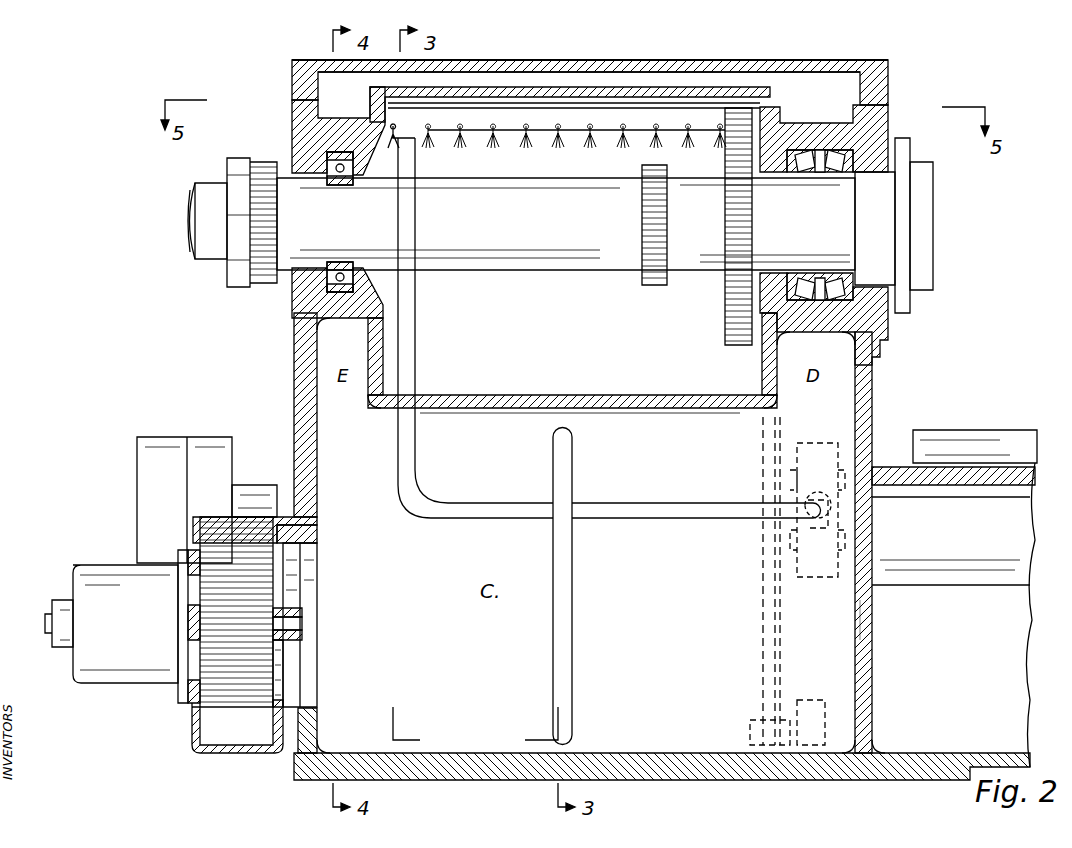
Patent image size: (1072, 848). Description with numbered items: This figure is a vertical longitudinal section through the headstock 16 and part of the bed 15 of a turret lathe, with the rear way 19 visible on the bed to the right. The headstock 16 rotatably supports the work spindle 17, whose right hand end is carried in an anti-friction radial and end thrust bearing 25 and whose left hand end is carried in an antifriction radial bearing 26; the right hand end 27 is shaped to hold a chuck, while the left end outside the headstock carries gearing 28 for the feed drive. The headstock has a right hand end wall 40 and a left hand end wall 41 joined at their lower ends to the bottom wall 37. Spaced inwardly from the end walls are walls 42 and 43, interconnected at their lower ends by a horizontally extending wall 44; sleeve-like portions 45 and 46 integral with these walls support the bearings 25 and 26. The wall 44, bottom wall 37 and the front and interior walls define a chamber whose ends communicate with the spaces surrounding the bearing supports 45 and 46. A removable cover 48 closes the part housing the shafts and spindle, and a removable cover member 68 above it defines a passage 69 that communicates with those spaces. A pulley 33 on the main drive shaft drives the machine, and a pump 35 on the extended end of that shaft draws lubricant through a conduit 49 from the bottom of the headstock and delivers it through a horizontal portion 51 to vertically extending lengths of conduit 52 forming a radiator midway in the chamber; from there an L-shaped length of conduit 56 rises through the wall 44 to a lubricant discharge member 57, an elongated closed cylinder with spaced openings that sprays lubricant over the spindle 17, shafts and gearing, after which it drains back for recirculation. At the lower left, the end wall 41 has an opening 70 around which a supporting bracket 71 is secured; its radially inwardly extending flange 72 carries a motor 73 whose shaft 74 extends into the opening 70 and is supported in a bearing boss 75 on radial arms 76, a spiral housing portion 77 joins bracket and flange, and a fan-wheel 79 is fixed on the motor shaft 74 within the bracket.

The bed 15 is at (1022, 662).
The headstock 16 is at (882, 104).
The work spindle 17 is at (560, 226).
The rear way 19 is at (975, 430).
The anti-friction radial and end thrust bearing 25 is at (800, 174).
The antifriction radial bearing 26 is at (339, 185).
The right hand end of work spindle 27 is at (912, 162).
The gearing 28 is at (262, 287).
The pulley 33 is at (212, 447).
The pump 35 is at (815, 443).
The bottom wall 37 is at (686, 778).
The right hand end wall 40 is at (874, 363).
The left hand end wall 41 is at (297, 355).
The wall 42 is at (765, 362).
The wall 43 is at (380, 360).
The horizontally extending wall 44 is at (628, 408).
The sleeve-like portion 45 is at (818, 317).
The sleeve-like portion 46 is at (357, 318).
The removable cover 48 is at (598, 88).
The conduit 49 is at (870, 628).
The portion of conduit 51 is at (665, 515).
The vertically extending length of conduit 52 is at (573, 612).
The L-shaped length of conduit 56 is at (415, 445).
The lubricant discharge member 57 is at (577, 128).
The removable cover member 68 is at (700, 61).
The passage 69 is at (540, 72).
The opening 70 is at (305, 562).
The supporting bracket 71 is at (300, 520).
The radially inwardly extending flange 72 is at (183, 703).
The motor 73 is at (111, 624).
The motor shaft 74 is at (303, 623).
The bearing boss 75 is at (302, 612).
The radial arms 76 is at (300, 675).
The housing portion 77 is at (245, 510).
The fan-wheel 79 is at (235, 705).